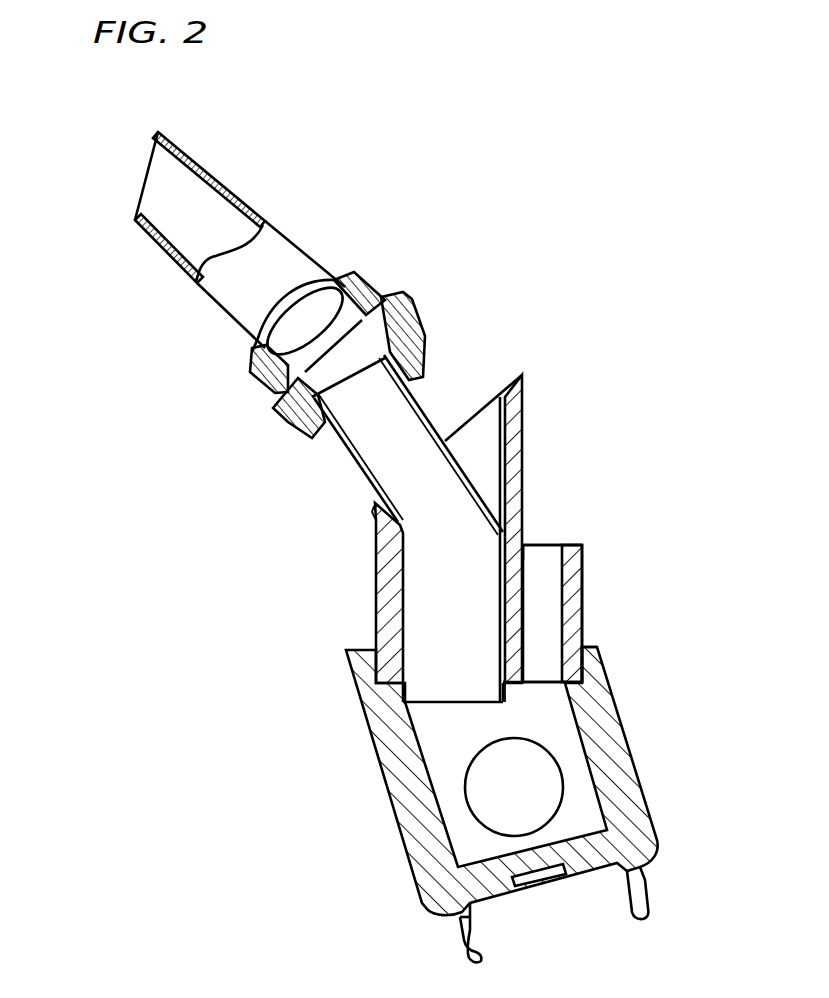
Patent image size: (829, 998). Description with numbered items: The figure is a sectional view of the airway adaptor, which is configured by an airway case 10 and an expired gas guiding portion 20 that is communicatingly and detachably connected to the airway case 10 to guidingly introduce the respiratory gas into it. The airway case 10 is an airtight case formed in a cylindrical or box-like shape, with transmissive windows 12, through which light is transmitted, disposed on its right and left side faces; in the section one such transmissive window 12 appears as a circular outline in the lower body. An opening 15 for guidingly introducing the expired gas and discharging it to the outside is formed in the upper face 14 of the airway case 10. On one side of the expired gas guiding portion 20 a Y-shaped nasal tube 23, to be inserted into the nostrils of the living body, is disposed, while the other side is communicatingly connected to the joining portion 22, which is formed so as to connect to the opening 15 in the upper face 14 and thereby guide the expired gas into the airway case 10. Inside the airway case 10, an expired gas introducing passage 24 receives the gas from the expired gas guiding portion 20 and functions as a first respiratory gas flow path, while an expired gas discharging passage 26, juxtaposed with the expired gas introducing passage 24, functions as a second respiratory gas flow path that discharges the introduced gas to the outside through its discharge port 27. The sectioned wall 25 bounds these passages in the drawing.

The airway case 10 is at (650, 795).
The transmissive window 12 is at (487, 790).
The upper face 14 is at (585, 645).
The opening 15 is at (520, 693).
The expired gas guiding portion 20 is at (303, 245).
The joining portion 22 is at (387, 607).
The Y-shaped nasal tube 23 is at (237, 302).
The expired gas introducing passage 24 is at (430, 658).
The pipe outer wall 25 is at (513, 505).
The expired gas discharging passage 26 is at (538, 575).
The discharge port 27 is at (538, 540).